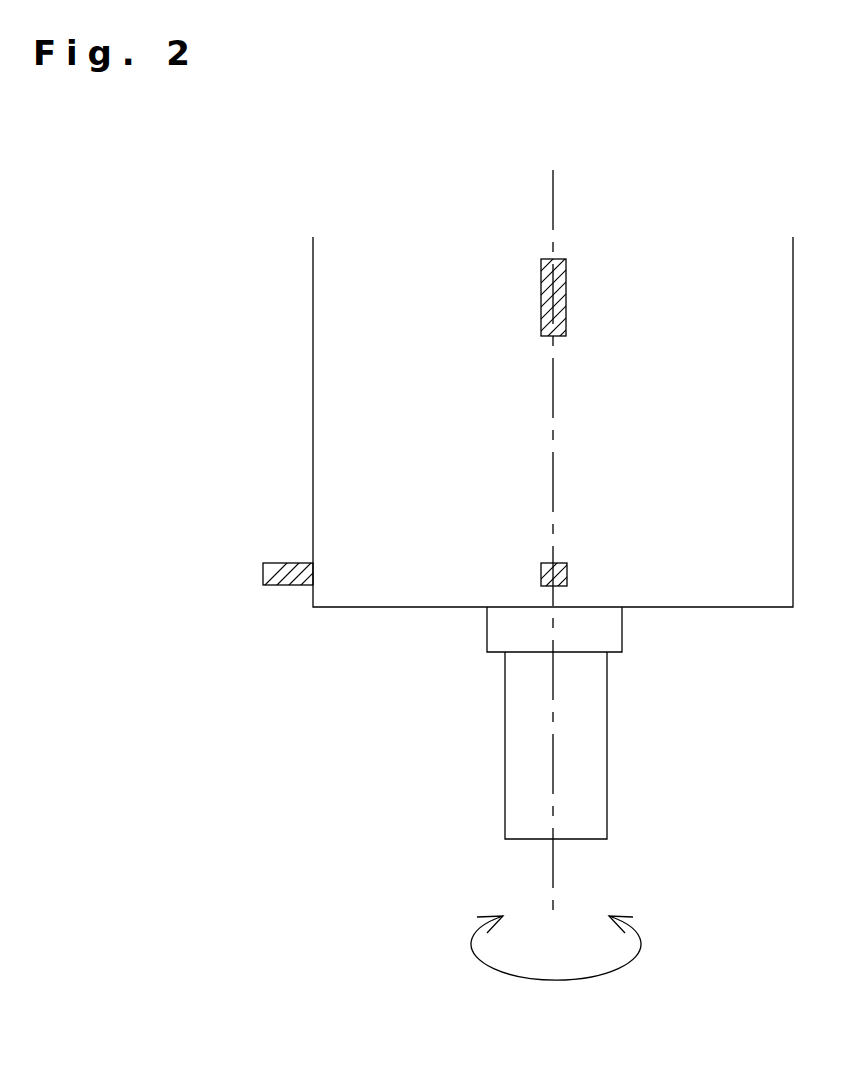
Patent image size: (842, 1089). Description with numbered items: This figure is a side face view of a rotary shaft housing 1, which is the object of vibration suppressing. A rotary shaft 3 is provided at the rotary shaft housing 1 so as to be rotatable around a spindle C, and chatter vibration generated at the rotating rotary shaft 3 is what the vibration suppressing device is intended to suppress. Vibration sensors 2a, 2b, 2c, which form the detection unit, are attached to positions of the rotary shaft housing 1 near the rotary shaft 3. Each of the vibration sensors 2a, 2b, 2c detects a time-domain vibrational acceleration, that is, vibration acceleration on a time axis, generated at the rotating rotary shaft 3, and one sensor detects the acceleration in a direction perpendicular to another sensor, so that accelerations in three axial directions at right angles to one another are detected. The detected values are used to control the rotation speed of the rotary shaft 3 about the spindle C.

The rotary shaft housing 1 is at (328, 380).
The vibration sensor 2a is at (263, 570).
The vibration sensor 2b is at (567, 572).
The vibration sensor 2c is at (567, 295).
The rotary shaft 3 is at (520, 743).
The spindle C is at (556, 975).